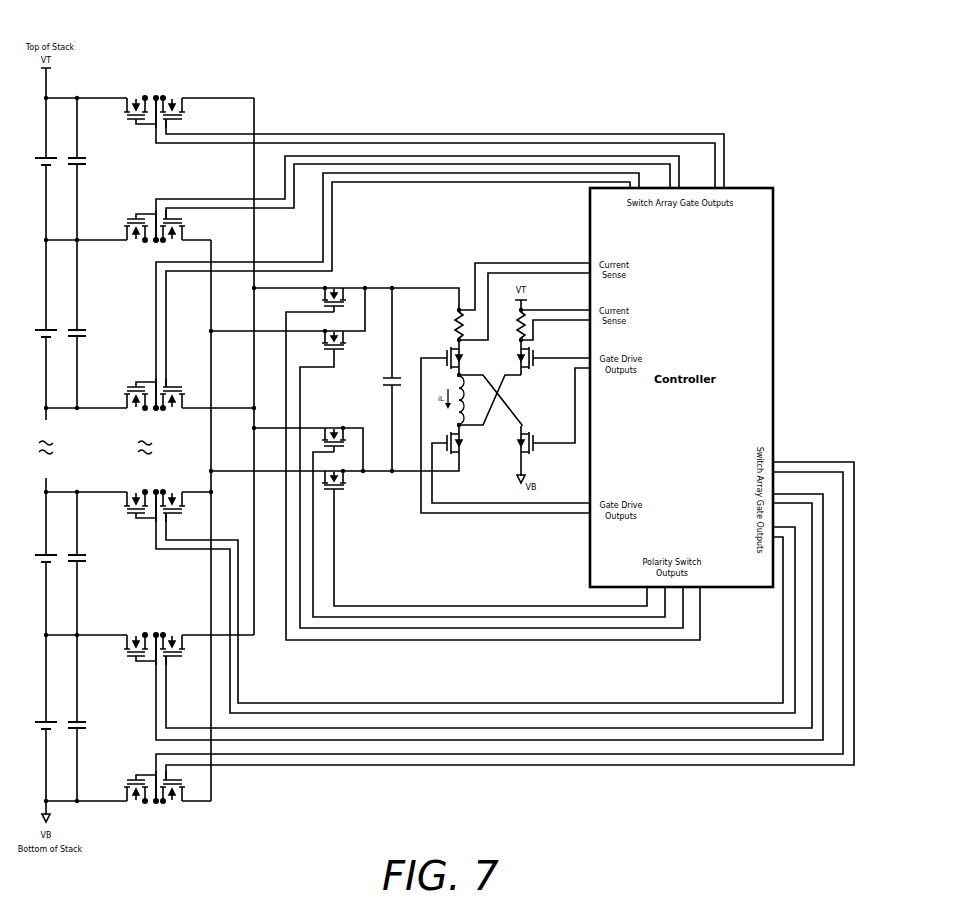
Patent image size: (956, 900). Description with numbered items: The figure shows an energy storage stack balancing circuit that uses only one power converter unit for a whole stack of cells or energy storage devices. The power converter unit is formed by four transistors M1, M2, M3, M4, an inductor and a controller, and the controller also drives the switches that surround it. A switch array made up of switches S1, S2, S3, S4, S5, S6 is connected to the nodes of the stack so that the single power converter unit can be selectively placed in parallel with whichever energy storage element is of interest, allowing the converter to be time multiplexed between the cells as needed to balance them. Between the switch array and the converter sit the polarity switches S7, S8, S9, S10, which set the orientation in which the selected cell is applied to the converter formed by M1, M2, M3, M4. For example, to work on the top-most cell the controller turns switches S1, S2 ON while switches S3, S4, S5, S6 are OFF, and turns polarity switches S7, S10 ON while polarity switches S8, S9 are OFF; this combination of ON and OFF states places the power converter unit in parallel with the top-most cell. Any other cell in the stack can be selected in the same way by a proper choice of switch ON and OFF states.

The switch S1 is at (424, 135).
The switch S2 is at (401, 207).
The switch S3 is at (381, 301).
The switch S4 is at (459, 596).
The switch S5 is at (464, 617).
The switch S6 is at (489, 642).
The polarity switch S7 is at (493, 458).
The polarity switch S8 is at (491, 479).
The polarity switch S9 is at (489, 515).
The polarity switch S10 is at (484, 538).
The FET of power converter unit M1 is at (504, 427).
The FET of power converter unit M2 is at (511, 462).
The FET of power converter unit M3 is at (553, 425).
The FET of power converter unit M4 is at (554, 358).